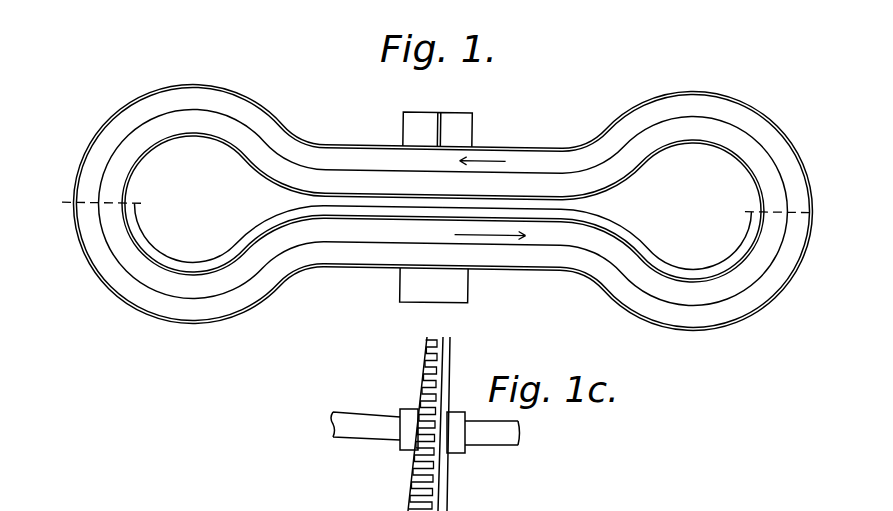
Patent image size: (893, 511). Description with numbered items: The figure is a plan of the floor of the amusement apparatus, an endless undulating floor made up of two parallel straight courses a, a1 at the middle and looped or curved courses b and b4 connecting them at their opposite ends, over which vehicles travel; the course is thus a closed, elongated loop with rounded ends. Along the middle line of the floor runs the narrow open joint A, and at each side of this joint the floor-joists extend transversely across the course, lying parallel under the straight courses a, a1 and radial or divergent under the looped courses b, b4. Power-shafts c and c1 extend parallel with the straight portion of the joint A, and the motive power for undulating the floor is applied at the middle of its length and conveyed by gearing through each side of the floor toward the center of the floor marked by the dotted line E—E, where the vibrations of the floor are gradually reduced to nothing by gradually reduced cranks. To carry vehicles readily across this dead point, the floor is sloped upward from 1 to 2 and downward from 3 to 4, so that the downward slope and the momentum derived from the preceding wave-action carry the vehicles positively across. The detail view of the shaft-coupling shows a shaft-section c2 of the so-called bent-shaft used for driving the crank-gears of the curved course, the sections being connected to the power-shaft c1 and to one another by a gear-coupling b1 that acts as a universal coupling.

In FIG. 1, the upward slope start 1 is at (713, 80).
In FIG. 1, the upward slope end 2 is at (188, 72).
In FIG. 1, the downward slope start 3 is at (308, 316).
In FIG. 1, the downward slope end 4 is at (692, 347).
In FIG. 1, the center line E— E is at (435, 211).
In FIG. 1, the open joint A is at (518, 172).
In FIG. 1, the parallel course a is at (447, 285).
In FIG. 1, the parallel course a1 is at (455, 129).
In FIG. 1, the looped course b is at (289, 216).
In FIG. 1, the inner guide rail right loop b4 is at (597, 219).
In FIG. 1C, the universal coupling b1 is at (413, 468).
In FIG. 1, the power-shaft c is at (248, 173).
In FIG. 1, the power-shaft c1 is at (345, 147).
In FIG. 1C, the shaft-section c2 is at (425, 416).